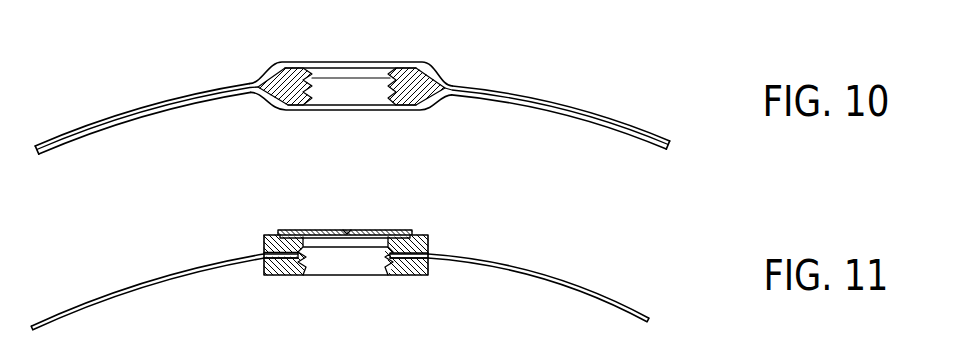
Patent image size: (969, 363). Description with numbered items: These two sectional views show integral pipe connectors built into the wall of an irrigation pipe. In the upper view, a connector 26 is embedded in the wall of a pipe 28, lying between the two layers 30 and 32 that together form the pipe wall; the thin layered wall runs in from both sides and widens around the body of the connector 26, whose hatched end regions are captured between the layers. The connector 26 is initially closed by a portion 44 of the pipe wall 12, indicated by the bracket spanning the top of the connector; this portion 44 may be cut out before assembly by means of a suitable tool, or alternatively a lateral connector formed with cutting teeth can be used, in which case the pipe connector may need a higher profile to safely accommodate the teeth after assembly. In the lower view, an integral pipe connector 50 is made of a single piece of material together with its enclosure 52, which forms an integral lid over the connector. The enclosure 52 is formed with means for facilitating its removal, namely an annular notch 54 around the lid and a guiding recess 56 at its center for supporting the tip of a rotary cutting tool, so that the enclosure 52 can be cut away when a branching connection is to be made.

In FIG. 11, the pipe 12 is at (598, 295).
In FIG. 10, the integral pipe connector 26 is at (430, 80).
In FIG. 10, the pipe 28 is at (598, 114).
In FIG. 10, the layer 30 is at (528, 96).
In FIG. 10, the layer 32 is at (564, 116).
In FIG. 10, the portion of the pipe wall 44 is at (406, 56).
In FIG. 11, the integral pipe connector 50 is at (433, 248).
In FIG. 11, the enclosure 52 is at (371, 229).
In FIG. 11, the annular notch 54 is at (408, 232).
In FIG. 11, the guiding recess 56 is at (345, 230).